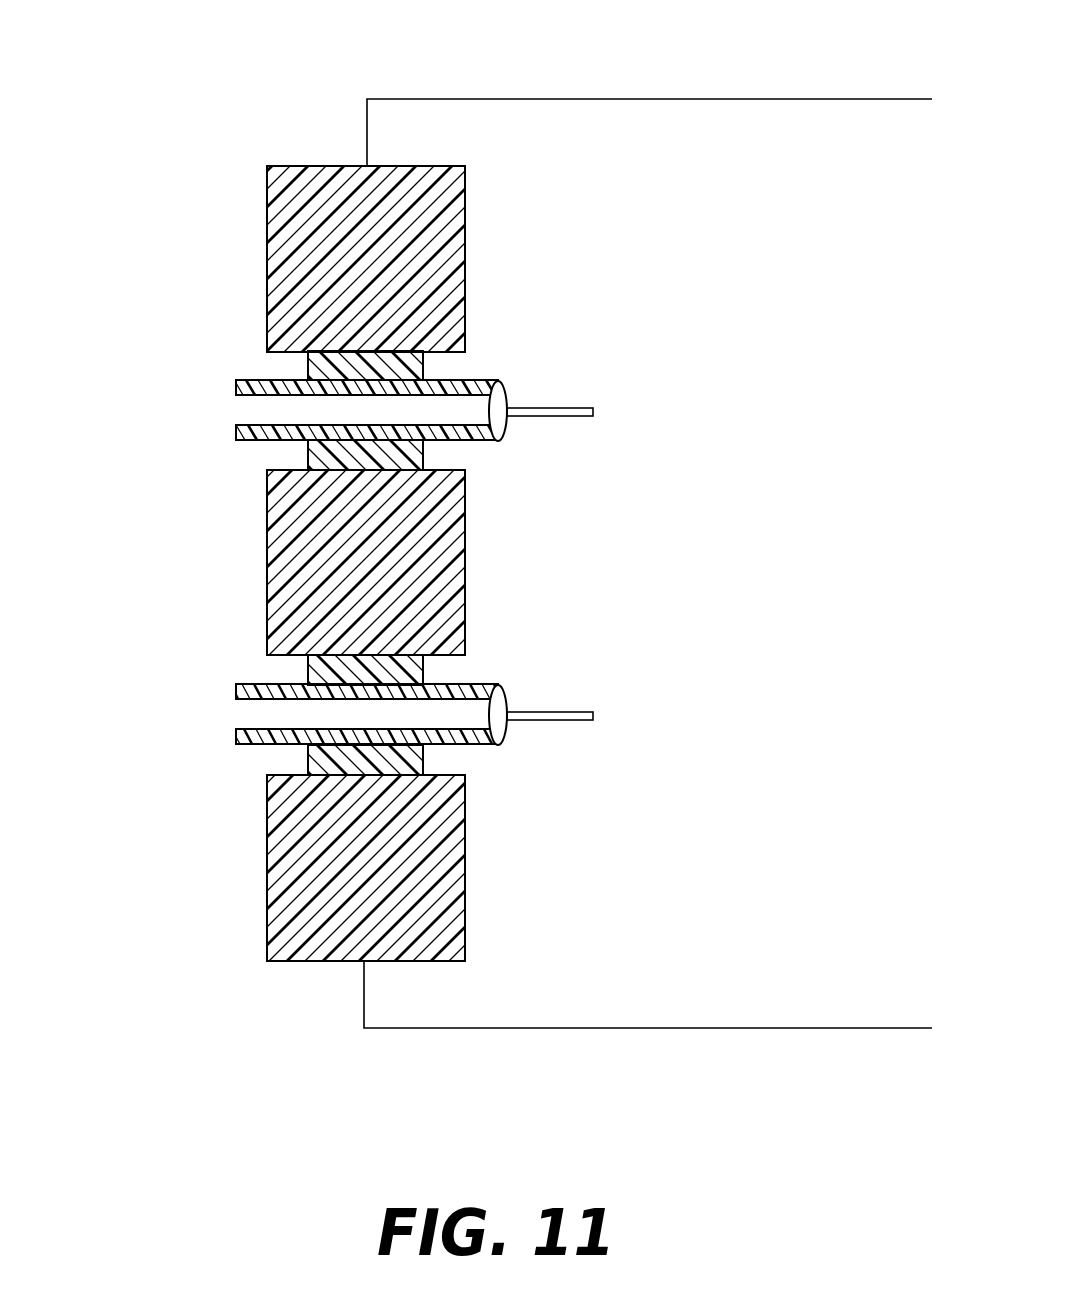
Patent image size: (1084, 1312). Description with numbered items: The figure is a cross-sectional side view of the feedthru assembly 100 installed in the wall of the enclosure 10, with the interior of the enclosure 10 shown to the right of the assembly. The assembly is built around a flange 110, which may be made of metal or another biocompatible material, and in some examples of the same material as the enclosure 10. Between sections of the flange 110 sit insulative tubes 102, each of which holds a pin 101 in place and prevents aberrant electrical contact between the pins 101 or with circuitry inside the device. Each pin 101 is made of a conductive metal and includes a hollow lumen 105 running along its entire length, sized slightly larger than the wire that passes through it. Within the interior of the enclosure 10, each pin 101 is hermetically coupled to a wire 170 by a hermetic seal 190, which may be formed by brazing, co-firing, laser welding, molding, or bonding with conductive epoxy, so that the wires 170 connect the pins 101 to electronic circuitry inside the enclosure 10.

The enclosure 10 is at (836, 625).
The feedthru assembly 100 is at (240, 97).
The pin 101 is at (236, 432).
The insulative tube 102 is at (308, 368).
The lumen 105 is at (263, 412).
The flange 110 is at (267, 248).
The wire 170 is at (598, 412).
The hermetic seal 190 is at (498, 402).